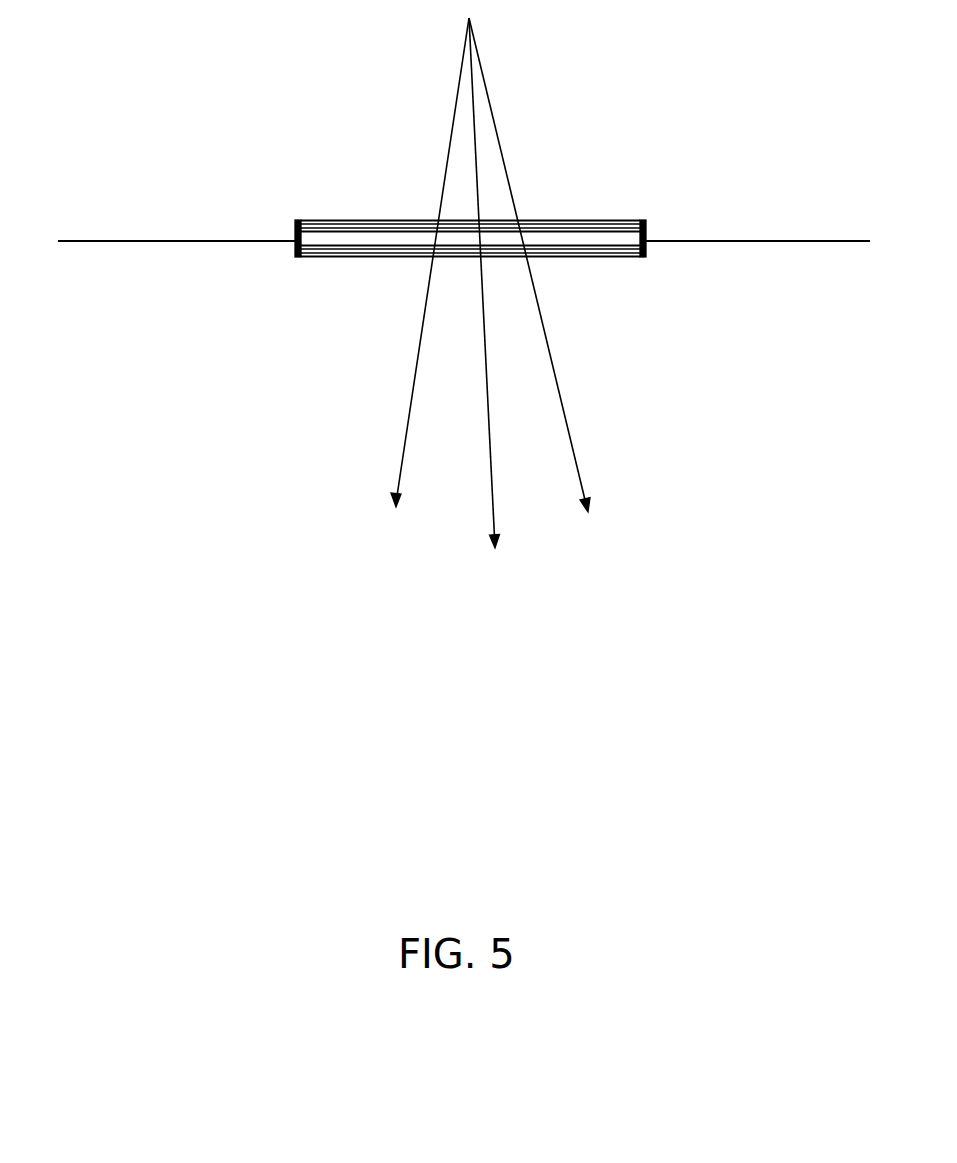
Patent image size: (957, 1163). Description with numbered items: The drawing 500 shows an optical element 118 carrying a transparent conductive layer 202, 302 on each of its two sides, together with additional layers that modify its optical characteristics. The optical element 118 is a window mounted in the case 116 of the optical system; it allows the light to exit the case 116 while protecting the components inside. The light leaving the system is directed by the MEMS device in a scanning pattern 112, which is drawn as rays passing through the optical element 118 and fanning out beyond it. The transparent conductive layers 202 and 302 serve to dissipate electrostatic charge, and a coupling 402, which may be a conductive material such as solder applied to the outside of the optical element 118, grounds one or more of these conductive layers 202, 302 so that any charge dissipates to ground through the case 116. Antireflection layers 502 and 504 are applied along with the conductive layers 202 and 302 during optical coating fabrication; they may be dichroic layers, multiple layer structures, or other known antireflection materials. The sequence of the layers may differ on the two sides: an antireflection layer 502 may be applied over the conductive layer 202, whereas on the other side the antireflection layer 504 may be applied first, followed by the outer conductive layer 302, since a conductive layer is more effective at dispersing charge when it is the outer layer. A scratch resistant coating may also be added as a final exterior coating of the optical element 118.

The drawing 500 is at (470, 922).
The scanning pattern 112 is at (499, 138).
The case 116 is at (772, 240).
The optical element 118 is at (338, 240).
The transparent conductive layer 202 is at (565, 220).
The transparent conductive layer 302 is at (618, 257).
The coupling 402 is at (296, 250).
The antireflection layer 502 is at (537, 220).
The antireflection layer 504 is at (557, 258).